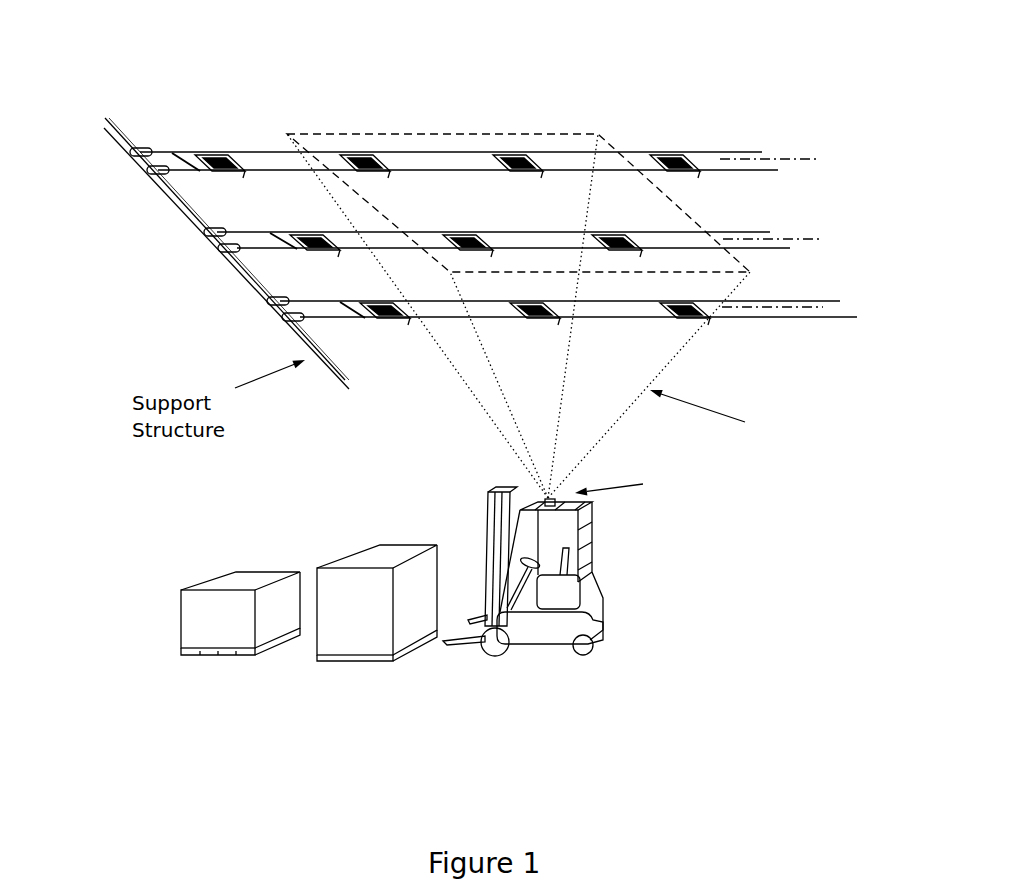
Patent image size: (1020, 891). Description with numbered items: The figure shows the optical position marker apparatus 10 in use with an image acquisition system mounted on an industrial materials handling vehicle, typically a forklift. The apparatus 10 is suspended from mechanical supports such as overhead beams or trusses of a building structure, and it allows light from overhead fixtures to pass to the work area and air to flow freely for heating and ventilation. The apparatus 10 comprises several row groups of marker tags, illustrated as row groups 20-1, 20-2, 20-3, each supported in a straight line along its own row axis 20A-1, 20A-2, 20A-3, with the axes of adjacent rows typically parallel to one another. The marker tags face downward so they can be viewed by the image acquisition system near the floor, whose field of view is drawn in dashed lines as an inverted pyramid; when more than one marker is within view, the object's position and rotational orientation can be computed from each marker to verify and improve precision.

The optical position marker apparatus 10 is at (626, 67).
The row group 20-1 is at (175, 180).
The row group 20-2 is at (243, 257).
The row group 20-3 is at (319, 324).
The row axis 20A-1 is at (787, 159).
The row axis 20A-2 is at (805, 239).
The row axis 20A-3 is at (822, 307).